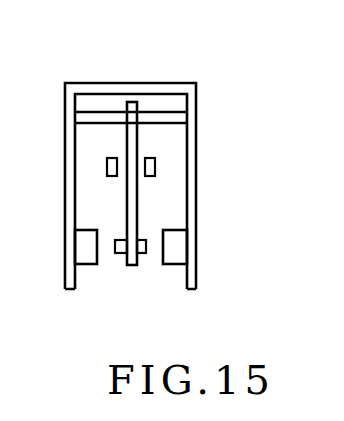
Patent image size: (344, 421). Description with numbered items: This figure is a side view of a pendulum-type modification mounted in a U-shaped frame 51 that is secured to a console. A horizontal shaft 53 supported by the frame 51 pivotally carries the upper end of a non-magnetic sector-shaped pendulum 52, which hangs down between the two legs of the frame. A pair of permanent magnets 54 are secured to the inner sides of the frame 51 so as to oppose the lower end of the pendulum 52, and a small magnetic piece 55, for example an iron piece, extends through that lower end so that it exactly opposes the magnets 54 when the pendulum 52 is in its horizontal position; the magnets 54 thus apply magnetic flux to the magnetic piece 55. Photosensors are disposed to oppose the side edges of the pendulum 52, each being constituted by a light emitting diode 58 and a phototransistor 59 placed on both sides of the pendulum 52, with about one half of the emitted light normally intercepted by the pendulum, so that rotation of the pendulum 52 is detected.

The U-shaped frame 51 is at (197, 252).
The pendulum 52 is at (135, 208).
The horizontal shaft 53 is at (170, 112).
The permanent magnets 54 is at (87, 265).
The magnetic piece 55 is at (138, 258).
The light emitting diode 58 is at (113, 178).
The phototransistor 59 is at (155, 168).